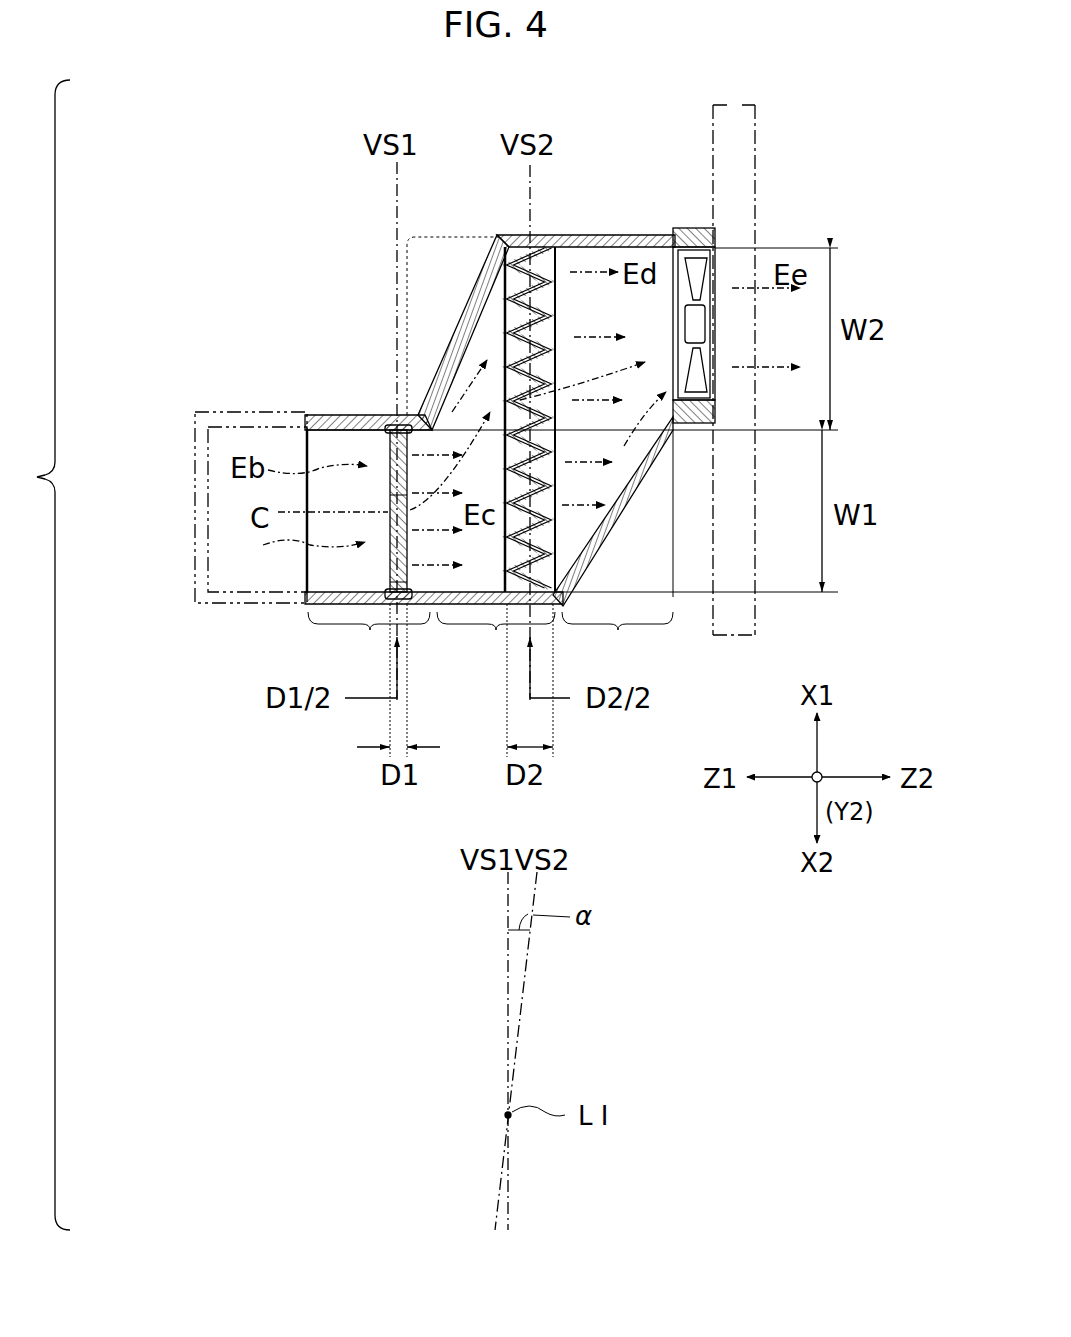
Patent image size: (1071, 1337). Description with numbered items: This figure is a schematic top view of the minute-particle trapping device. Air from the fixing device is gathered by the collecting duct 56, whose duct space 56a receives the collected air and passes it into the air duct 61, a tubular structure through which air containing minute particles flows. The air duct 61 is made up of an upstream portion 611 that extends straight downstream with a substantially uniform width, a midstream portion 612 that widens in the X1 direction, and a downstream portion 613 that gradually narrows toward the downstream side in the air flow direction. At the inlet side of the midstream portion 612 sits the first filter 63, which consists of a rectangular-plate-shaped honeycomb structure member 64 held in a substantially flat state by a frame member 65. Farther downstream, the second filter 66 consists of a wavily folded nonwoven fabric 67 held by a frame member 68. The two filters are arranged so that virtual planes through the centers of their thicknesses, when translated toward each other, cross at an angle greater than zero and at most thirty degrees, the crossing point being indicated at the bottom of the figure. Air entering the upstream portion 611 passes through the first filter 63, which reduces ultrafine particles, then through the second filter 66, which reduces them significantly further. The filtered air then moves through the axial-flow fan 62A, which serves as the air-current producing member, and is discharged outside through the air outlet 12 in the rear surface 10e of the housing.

The rear surface 10e is at (735, 100).
The air outlet 12 is at (728, 243).
The collecting duct 56 is at (193, 486).
The duct space 56a is at (225, 548).
The air duct 61 is at (308, 412).
The upstream portion 611 is at (369, 639).
The midstream portion 612 is at (405, 325).
The downstream portion 613 is at (613, 542).
The axial-flow fan 62A is at (692, 226).
The first filter 63 is at (385, 455).
The honeycomb structure member 64 is at (388, 503).
The frame member 65 is at (388, 590).
The second filter 66 is at (497, 317).
The nonwoven fabric 67 is at (540, 343).
The frame member 68 is at (562, 244).